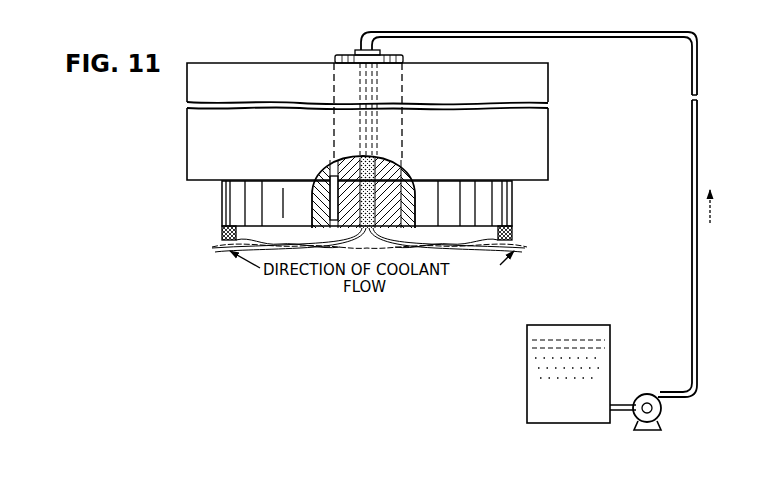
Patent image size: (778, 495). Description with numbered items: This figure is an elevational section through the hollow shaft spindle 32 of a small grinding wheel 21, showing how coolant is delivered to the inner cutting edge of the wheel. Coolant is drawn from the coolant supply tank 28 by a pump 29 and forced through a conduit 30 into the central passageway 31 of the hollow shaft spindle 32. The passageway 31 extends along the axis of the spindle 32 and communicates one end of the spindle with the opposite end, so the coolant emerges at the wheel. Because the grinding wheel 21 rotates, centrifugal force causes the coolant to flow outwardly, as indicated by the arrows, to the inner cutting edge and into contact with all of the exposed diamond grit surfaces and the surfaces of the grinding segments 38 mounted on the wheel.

The grinding wheel 21 is at (221, 213).
The coolant supply tank 28 is at (526, 383).
The pump 29 is at (633, 425).
The conduit 30 is at (565, 32).
The central passageway 31 is at (372, 179).
The hollow shaft spindle 32 is at (329, 169).
The grinding segments 38 is at (533, 235).